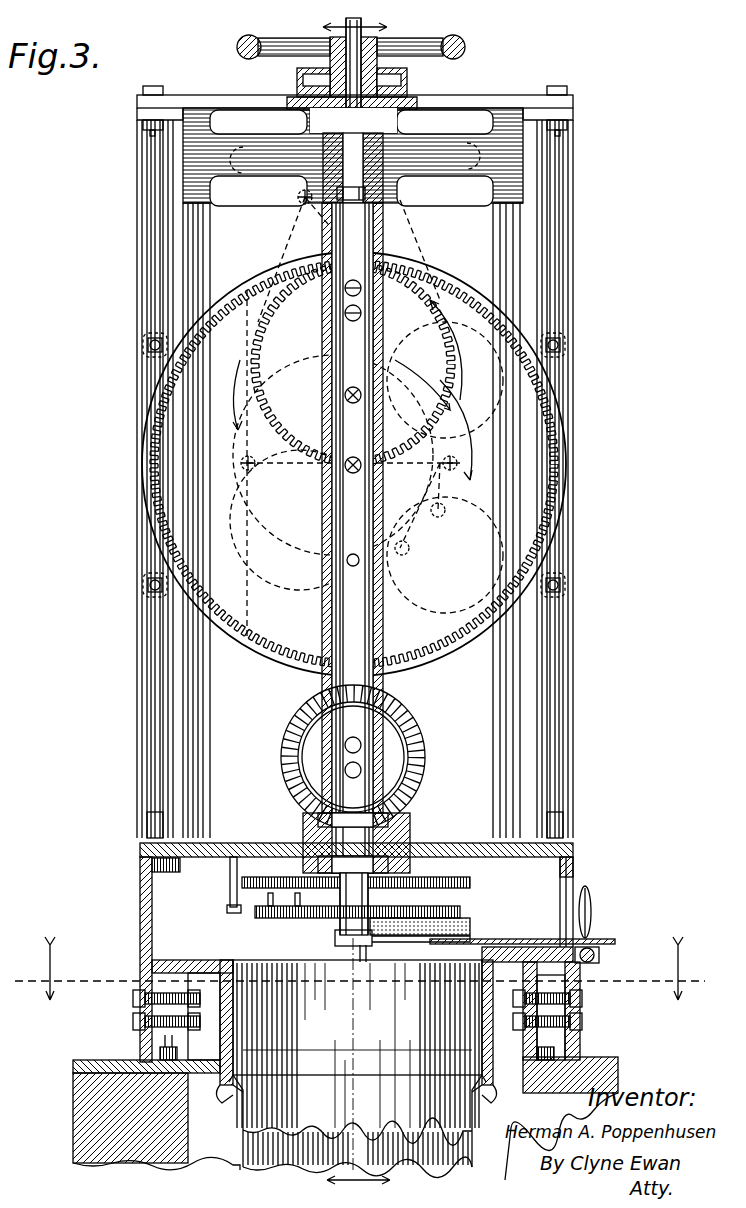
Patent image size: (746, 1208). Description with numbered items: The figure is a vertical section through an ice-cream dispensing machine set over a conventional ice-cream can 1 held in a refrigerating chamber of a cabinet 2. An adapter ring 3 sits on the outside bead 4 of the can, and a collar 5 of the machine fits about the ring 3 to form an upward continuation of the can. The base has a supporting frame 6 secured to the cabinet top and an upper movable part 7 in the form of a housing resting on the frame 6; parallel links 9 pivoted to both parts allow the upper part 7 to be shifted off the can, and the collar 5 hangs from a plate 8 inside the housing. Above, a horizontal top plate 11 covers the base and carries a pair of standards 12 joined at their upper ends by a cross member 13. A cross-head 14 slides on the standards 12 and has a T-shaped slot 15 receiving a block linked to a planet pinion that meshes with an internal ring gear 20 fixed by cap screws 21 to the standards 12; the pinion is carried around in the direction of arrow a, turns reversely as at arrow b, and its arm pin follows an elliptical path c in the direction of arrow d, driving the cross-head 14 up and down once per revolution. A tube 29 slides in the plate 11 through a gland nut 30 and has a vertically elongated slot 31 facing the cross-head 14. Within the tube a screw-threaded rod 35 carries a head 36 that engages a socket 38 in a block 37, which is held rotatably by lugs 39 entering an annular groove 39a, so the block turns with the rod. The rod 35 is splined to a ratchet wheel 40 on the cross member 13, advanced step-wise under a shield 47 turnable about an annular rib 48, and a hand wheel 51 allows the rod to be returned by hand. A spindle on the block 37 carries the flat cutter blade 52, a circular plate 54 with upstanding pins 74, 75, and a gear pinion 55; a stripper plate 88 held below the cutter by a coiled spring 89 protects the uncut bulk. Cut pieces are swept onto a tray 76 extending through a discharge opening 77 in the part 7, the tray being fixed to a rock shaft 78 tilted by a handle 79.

The ice-cream can 1 is at (268, 1155).
The cabinet 2 is at (80, 1060).
The adapter ring 3 is at (232, 1100).
The outside bead 4 is at (237, 1110).
The collar 5 is at (240, 1020).
The supporting frame 6 is at (160, 1052).
The upper movable part 7 is at (140, 912).
The plate 8 is at (225, 964).
The parallel link 9 is at (133, 1000).
The top plate 11 is at (258, 843).
The standard 12 is at (138, 190).
The cross member 13 is at (211, 100).
The cross-head 14 is at (240, 180).
The T-shaped slot 15 is at (458, 186).
The internal ring gear 20 is at (490, 283).
The cap screw 21 is at (147, 345).
The tube 29 is at (322, 240).
The gland nut 30 is at (385, 818).
The vertically elongated slot 31 is at (362, 226).
The screw-threaded rod 35 is at (365, 115).
The head 36 is at (366, 194).
The block 37 is at (400, 826).
The socket 38 is at (342, 815).
The lug 39 is at (395, 862).
The annular groove 39a is at (316, 862).
The ratchet wheel 40 is at (372, 90).
The shield 47 is at (300, 82).
The annular rib 48 is at (407, 88).
The hand wheel 51 is at (258, 44).
The cutter blade 52 is at (420, 942).
The circular plate 54 is at (462, 910).
The gear pinion 55 is at (362, 880).
The upstanding pin 74 is at (298, 906).
The upstanding pin 75 is at (271, 906).
The tray 76 is at (535, 939).
The discharge opening 77 is at (568, 882).
The rock shaft 78 is at (596, 955).
The handle 79 is at (591, 906).
The stripper plate 88 is at (365, 945).
The coiled spring 89 is at (348, 938).
The direction arrow a is at (457, 430).
The direction arrow b is at (428, 355).
The elliptical path c is at (247, 440).
The direction arrow d is at (238, 398).